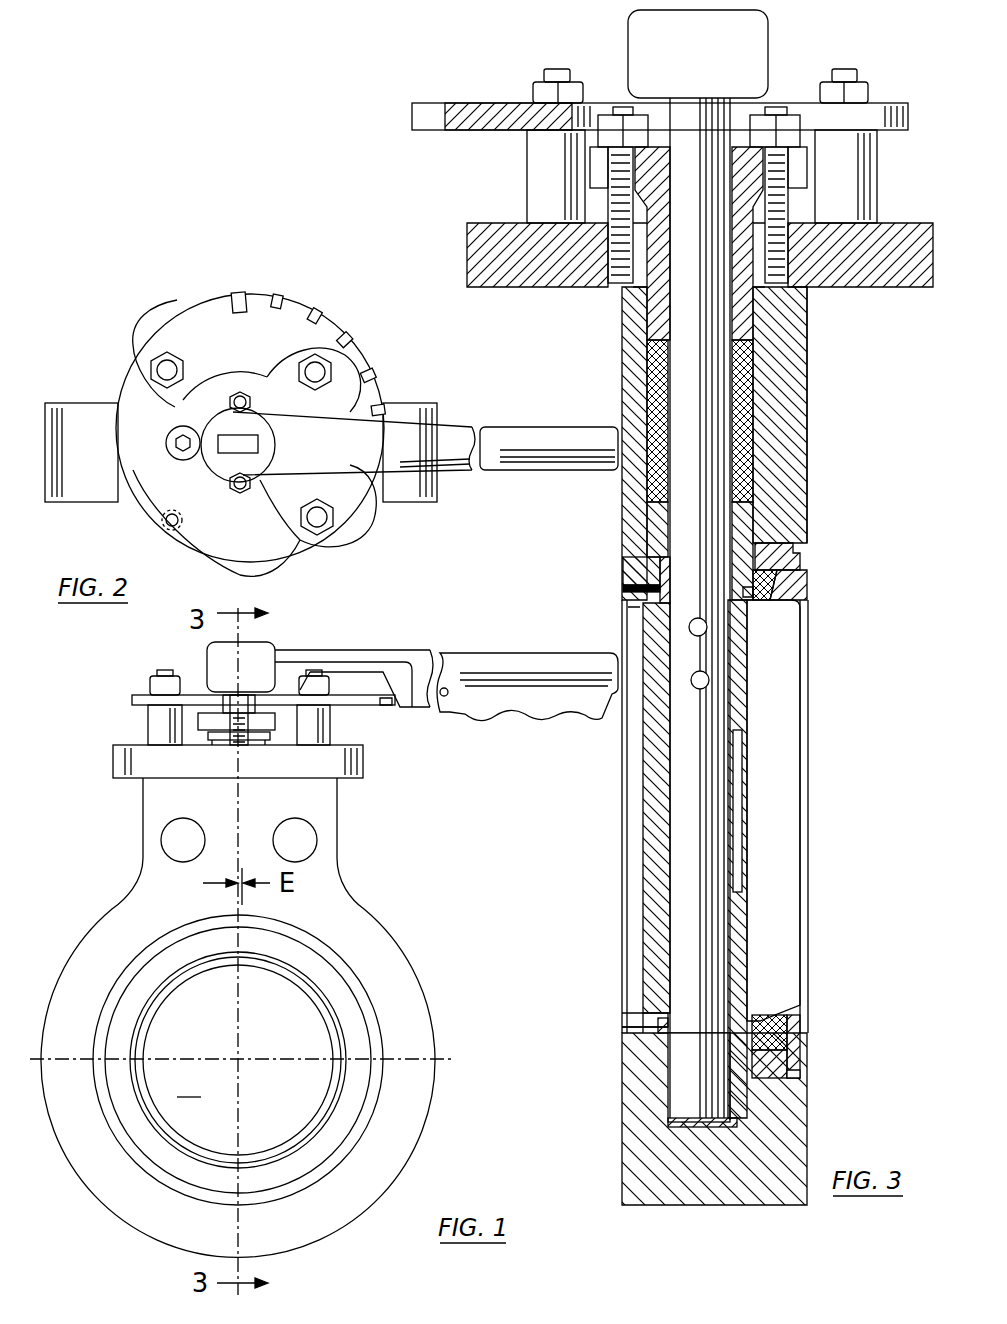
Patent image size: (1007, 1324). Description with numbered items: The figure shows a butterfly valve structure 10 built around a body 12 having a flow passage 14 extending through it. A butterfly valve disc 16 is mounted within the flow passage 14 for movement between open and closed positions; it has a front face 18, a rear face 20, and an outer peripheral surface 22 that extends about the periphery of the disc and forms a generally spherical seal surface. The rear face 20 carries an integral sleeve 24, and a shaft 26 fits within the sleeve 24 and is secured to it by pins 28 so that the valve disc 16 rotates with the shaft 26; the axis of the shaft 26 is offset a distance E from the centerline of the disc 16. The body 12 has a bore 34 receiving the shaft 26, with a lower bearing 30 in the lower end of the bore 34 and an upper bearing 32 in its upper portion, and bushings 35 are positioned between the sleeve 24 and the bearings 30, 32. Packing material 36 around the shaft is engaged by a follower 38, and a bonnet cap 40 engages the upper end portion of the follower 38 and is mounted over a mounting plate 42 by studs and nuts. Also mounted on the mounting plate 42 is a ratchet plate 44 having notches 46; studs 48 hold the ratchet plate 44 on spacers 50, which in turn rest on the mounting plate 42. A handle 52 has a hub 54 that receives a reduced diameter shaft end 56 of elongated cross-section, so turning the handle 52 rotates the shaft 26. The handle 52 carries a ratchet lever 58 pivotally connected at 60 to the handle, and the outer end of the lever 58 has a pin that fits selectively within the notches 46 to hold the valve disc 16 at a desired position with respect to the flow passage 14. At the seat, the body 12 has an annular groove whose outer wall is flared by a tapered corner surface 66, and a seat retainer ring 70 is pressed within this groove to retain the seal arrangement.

In FIG. 3, the butterfly valve structure 10 is at (822, 357).
In FIG. 1, the butterfly valve structure 10 is at (108, 864).
In FIG. 3, the body 12 is at (793, 435).
In FIG. 1, the body 12 is at (354, 915).
In FIG. 2, the body 12 is at (78, 405).
In FIG. 3, the flow passage 14 is at (637, 1027).
In FIG. 3, the butterfly valve disc 16 is at (790, 658).
In FIG. 1, the butterfly valve disc 16 is at (290, 990).
In FIG. 3, the front face 18 is at (800, 768).
In FIG. 1, the front face 18 is at (188, 1083).
In FIG. 3, the rear face 20 is at (738, 850).
In FIG. 3, the outer peripheral surface 22 is at (790, 1018).
In FIG. 1, the outer peripheral surface 22 is at (154, 996).
In FIG. 3, the sleeve 24 is at (652, 997).
In FIG. 3, the shaft 26 is at (680, 792).
In FIG. 3, the pins 28 is at (707, 629).
In FIG. 3, the lower bearing 30 is at (660, 1093).
In FIG. 3, the upper bearing 32 is at (660, 557).
In FIG. 3, the bore 34 is at (665, 527).
In FIG. 3, the bushings 35 is at (658, 590).
In FIG. 3, the packing material 36 is at (650, 397).
In FIG. 3, the follower 38 is at (650, 313).
In FIG. 3, the bonnet cap 40 is at (798, 170).
In FIG. 1, the bonnet cap 40 is at (270, 722).
In FIG. 2, the bonnet cap 40 is at (210, 478).
In FIG. 3, the mounting plate 42 is at (887, 237).
In FIG. 1, the mounting plate 42 is at (238, 761).
In FIG. 3, the ratchet plate 44 is at (453, 123).
In FIG. 1, the ratchet plate 44 is at (132, 700).
In FIG. 2, the ratchet plate 44 is at (200, 312).
In FIG. 1, the notches 46 is at (385, 707).
In FIG. 2, the notches 46 is at (310, 322).
In FIG. 2, the studs 48 is at (165, 358).
In FIG. 3, the spacers 50 is at (533, 163).
In FIG. 1, the spacers 50 is at (155, 727).
In FIG. 1, the handle 52 is at (390, 657).
In FIG. 2, the handle 52 is at (440, 432).
In FIG. 3, the hub 54 is at (630, 72).
In FIG. 1, the hub 54 is at (207, 668).
In FIG. 2, the hub 54 is at (228, 465).
In FIG. 2, the reduced diameter shaft end 56 is at (262, 444).
In FIG. 1, the ratchet lever 58 is at (527, 667).
In FIG. 1, the pivotal connection 60 is at (447, 690).
In FIG. 3, the tapered corner surface 66 is at (787, 547).
In FIG. 3, the seat retainer ring 70 is at (806, 565).